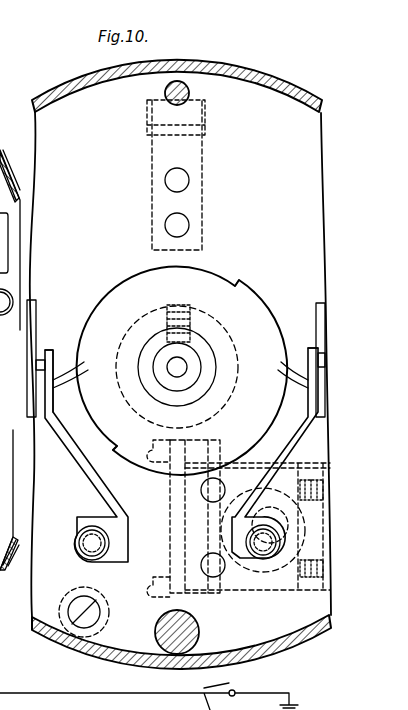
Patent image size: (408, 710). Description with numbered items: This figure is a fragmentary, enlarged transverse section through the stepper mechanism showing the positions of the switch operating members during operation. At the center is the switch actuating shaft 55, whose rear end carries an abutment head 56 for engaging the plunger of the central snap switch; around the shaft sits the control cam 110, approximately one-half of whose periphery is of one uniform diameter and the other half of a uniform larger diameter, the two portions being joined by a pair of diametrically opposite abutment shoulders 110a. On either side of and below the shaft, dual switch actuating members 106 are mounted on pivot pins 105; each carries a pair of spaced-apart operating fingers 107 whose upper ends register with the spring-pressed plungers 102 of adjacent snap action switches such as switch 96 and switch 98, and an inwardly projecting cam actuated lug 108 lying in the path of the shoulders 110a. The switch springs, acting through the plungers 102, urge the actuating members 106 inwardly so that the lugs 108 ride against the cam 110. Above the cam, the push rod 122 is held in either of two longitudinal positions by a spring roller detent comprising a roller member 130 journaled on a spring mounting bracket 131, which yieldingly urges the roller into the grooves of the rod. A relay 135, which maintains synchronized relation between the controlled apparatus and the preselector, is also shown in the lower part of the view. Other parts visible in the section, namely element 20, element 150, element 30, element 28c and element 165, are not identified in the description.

The housing wall 20 is at (70, 100).
The curved housing shell 150 is at (250, 80).
The push rod 122 is at (165, 90).
The roller member 130 is at (205, 112).
The spring mounting bracket 131 is at (202, 152).
The control cam 110 is at (205, 287).
The abutment shoulders 110a is at (250, 280).
The keyway 30 is at (212, 322).
The abutment head 56 is at (194, 357).
The switch actuating shaft 55 is at (183, 367).
The snap action switch 98 is at (36, 355).
The spring-pressed plunger 102 is at (40, 357).
The operating fingers 107 is at (46, 358).
The cam actuated lug 108 is at (70, 356).
The snap action switch 96 is at (321, 315).
The switch actuating members 106 is at (82, 468).
The pivot pins 105 is at (88, 546).
The relay 135 is at (286, 572).
The screw 28c is at (200, 636).
The switch 165 is at (298, 704).